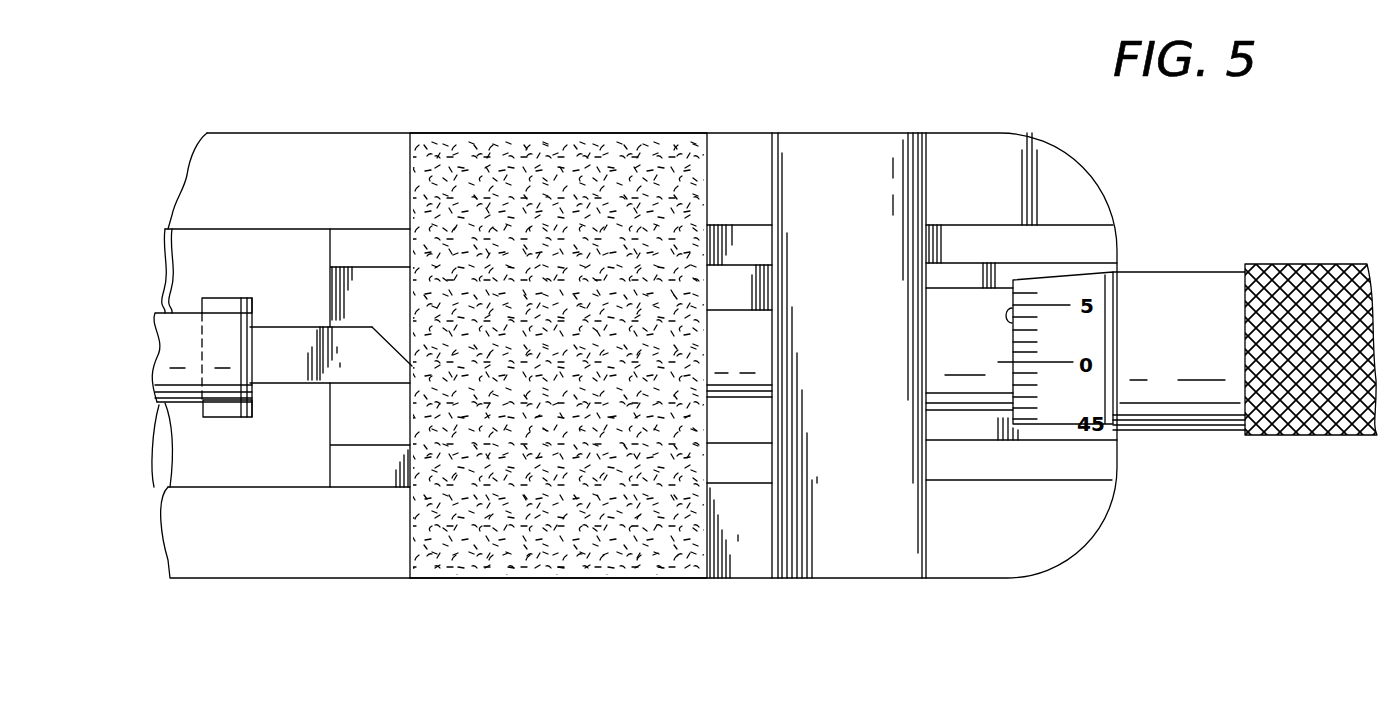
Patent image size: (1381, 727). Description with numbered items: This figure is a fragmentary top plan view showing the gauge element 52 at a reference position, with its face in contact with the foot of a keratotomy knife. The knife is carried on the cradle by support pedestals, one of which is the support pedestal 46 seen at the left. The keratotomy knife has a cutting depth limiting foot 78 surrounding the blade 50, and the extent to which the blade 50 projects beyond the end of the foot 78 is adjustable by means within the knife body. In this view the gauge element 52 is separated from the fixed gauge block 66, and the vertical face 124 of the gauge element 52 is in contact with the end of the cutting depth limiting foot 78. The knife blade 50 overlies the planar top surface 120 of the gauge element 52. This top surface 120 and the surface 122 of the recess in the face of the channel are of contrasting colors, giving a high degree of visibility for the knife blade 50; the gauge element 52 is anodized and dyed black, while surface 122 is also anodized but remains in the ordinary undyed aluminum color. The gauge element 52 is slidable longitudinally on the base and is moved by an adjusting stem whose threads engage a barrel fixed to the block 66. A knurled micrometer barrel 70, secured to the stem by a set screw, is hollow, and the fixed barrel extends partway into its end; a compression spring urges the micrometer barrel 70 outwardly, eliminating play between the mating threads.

The support pedestal 46 is at (245, 417).
The blade 50 is at (402, 345).
The gauge element 52 is at (592, 579).
The block 66 is at (857, 565).
The micrometer barrel 70 is at (1322, 432).
The cutting depth limiting foot 78 is at (293, 375).
The planar top surface 120 is at (482, 558).
The surface of recess 122 is at (370, 437).
The vertical face 124 is at (412, 548).